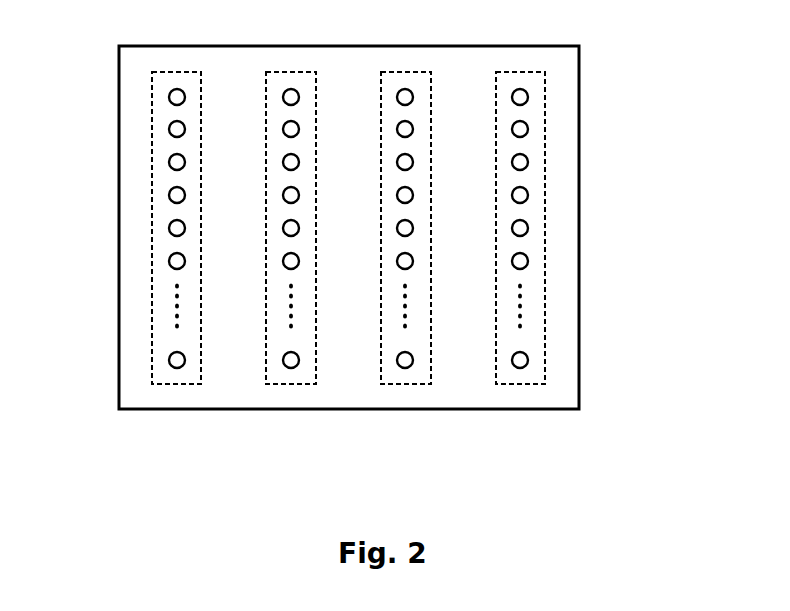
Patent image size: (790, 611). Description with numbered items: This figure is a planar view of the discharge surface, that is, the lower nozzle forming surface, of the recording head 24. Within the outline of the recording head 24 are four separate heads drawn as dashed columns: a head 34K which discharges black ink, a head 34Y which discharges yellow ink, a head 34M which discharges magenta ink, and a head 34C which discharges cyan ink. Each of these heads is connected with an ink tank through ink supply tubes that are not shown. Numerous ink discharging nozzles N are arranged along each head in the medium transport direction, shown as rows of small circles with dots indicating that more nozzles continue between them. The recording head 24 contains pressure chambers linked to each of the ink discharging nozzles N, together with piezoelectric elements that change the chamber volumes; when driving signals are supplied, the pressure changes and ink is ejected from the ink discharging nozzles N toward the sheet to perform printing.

The recording head 24 is at (579, 216).
The head 34K is at (177, 384).
The head 34Y is at (291, 384).
The head 34M is at (407, 384).
The head 34C is at (521, 384).
The ink discharging nozzle N is at (168, 95).